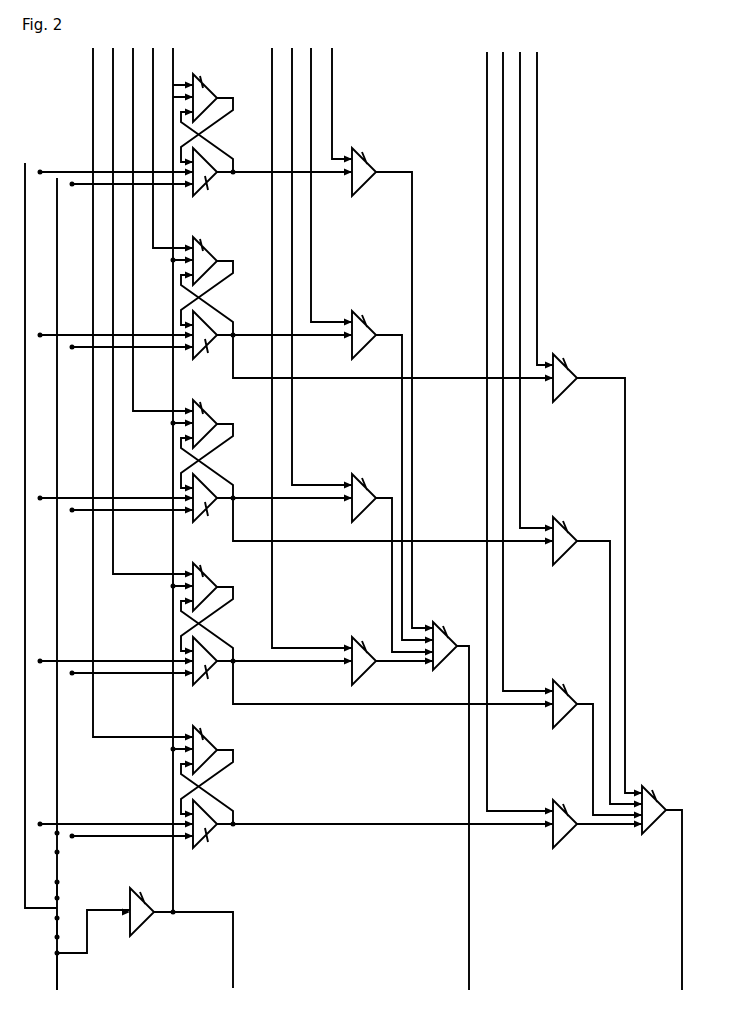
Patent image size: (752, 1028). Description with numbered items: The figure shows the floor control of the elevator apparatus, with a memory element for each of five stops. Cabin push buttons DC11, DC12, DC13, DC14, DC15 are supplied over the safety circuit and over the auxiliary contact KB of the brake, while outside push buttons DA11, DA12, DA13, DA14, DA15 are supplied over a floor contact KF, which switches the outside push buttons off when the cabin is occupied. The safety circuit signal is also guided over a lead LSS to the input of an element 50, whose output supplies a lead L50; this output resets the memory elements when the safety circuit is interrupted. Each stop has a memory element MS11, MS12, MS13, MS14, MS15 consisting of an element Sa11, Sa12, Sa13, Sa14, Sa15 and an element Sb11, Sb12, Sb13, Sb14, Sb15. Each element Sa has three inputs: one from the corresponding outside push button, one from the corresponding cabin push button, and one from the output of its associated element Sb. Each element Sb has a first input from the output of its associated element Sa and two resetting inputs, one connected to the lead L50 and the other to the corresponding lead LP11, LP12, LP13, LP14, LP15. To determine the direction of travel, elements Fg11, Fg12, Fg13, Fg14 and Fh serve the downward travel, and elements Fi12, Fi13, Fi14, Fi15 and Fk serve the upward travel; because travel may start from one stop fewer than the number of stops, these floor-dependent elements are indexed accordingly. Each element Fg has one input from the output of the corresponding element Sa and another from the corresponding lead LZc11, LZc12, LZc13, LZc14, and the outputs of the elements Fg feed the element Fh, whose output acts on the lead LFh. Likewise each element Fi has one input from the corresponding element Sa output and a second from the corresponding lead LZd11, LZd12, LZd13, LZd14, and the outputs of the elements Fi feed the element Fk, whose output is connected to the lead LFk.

The lead LP11 is at (174, 480).
The lead LP12 is at (164, 150).
The lead LP13 is at (154, 231).
The lead LP14 is at (144, 313).
The lead LP15 is at (134, 394).
The lead LZc11 is at (333, 105).
The lead LZc12 is at (323, 187).
The lead LZc13 is at (313, 268).
The lead LZc14 is at (303, 350).
The lead LZd11 is at (536, 210).
The lead LZd12 is at (528, 292).
The lead LZd13 is at (519, 373).
The lead LZd14 is at (511, 433).
The cabin push button DC11 is at (100, 192).
The cabin push button DC12 is at (100, 355).
The cabin push button DC13 is at (100, 518).
The cabin push button DC14 is at (100, 681).
The cabin push button DC15 is at (100, 832).
The outside push button DA11 is at (116, 206).
The outside push button DA12 is at (116, 369).
The outside push button DA13 is at (116, 532).
The outside push button DA14 is at (116, 695).
The outside push button DA15 is at (116, 849).
The floor contact KF is at (49, 892).
The auxiliary contact of the brake KB is at (49, 929).
The lead LSS is at (49, 970).
The element Sb Sb11 is at (204, 89).
The element Sa Sa11 is at (204, 183).
The memory element MS11 is at (216, 136).
The element Sb Sb12 is at (204, 252).
The element Sa Sa12 is at (204, 346).
The memory element MS12 is at (215, 298).
The element Sb Sb13 is at (204, 415).
The element Sa Sa13 is at (204, 509).
The memory element MS13 is at (215, 461).
The element Sb Sb14 is at (204, 578).
The element Sa Sa14 is at (204, 672).
The memory element MS14 is at (215, 624).
The element Sb Sb15 is at (204, 741).
The element Sa Sa15 is at (204, 835).
The memory element MS15 is at (215, 787).
The element Fg Fg11 is at (361, 165).
The element Fg Fg12 is at (361, 328).
The element Fg Fg13 is at (361, 491).
The element Fg Fg14 is at (361, 654).
The element Fh is at (442, 637).
The lead LFh is at (459, 818).
The element Fi Fi12 is at (561, 371).
The element Fi Fi13 is at (561, 534).
The element Fi Fi14 is at (561, 697).
The element Fi Fi15 is at (561, 817).
The element Fk is at (649, 801).
The lead LFk is at (672, 904).
The element 50 is at (138, 904).
The lead L50 is at (194, 951).